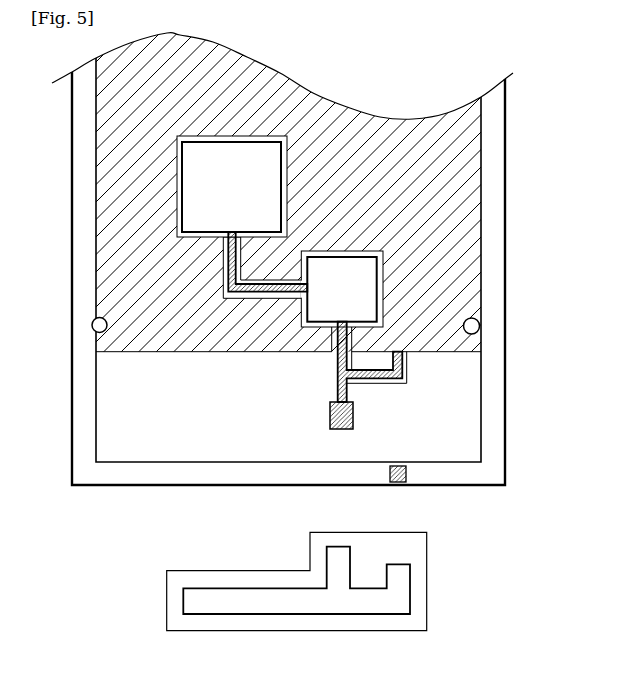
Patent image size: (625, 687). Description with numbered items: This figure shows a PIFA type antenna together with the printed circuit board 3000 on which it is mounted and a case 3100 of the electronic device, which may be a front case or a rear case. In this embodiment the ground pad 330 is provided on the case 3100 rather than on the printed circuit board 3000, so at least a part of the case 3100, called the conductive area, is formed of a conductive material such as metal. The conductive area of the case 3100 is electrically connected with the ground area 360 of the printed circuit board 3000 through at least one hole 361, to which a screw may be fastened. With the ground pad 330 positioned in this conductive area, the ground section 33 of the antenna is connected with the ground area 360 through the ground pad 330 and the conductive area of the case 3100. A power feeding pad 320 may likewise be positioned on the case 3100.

The printed circuit board 3000 is at (480, 112).
The case 3100 is at (495, 137).
The ground area 360 is at (455, 183).
The hole 361 is at (92, 324).
The power feeding pad 320 is at (334, 430).
The ground pad 330 is at (398, 483).
The ground section 33 is at (402, 575).